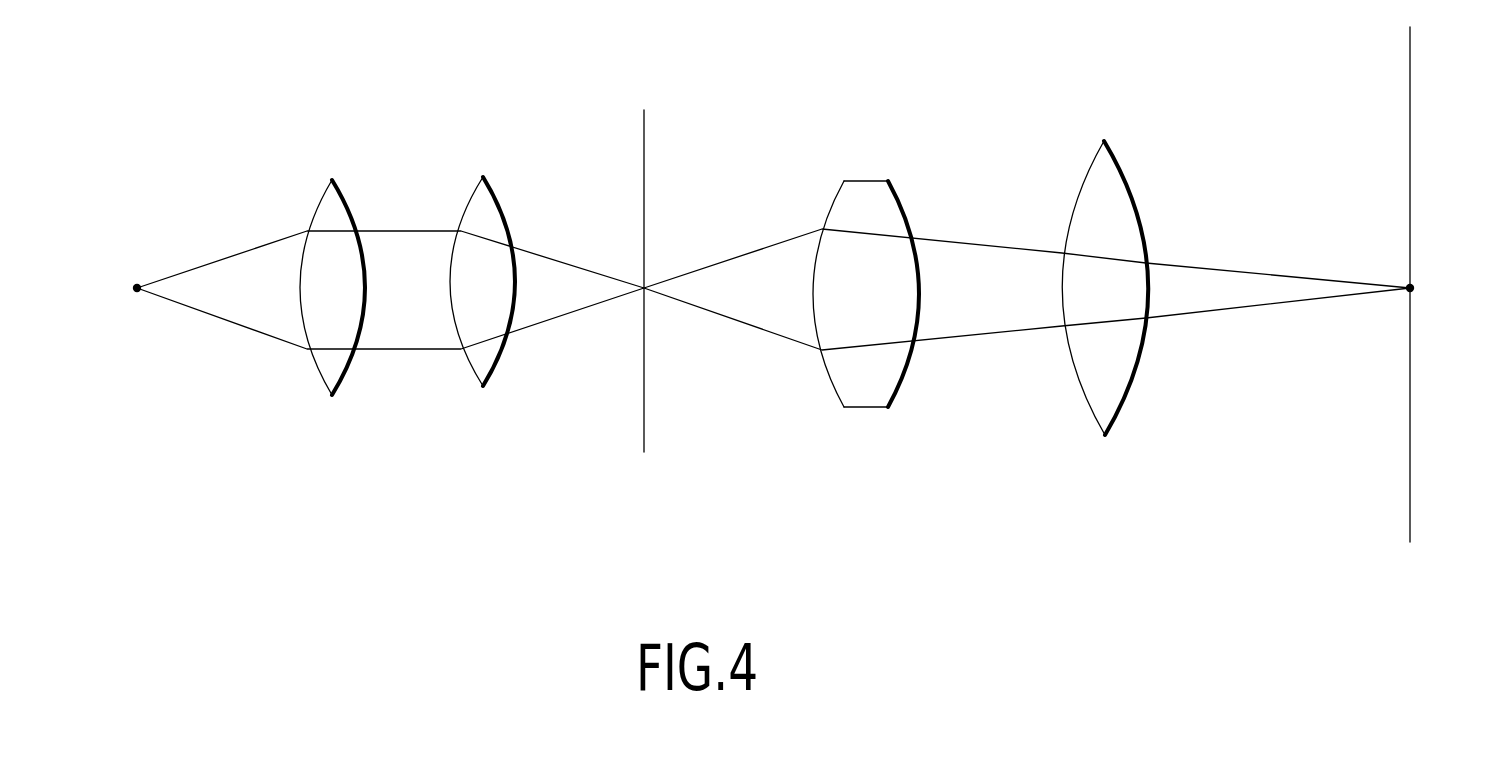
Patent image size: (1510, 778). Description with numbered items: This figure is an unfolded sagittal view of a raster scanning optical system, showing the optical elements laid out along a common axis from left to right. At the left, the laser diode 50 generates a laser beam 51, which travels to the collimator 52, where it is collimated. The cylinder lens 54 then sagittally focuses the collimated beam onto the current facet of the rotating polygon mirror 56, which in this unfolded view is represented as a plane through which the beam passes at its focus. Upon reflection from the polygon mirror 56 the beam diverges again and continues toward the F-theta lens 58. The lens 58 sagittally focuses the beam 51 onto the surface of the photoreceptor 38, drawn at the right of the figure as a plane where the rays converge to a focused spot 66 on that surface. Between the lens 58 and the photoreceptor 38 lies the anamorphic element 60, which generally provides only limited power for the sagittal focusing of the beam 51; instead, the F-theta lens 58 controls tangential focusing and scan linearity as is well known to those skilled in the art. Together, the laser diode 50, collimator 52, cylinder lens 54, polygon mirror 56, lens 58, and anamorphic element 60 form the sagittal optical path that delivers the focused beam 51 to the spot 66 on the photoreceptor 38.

The photoreceptor 38 is at (1410, 543).
The laser diode 50 is at (137, 293).
The laser beam 51 is at (214, 261).
The collimator 52 is at (347, 377).
The cylinder lens 54 is at (492, 373).
The rotating polygon mirror 56 is at (644, 453).
The F-theta lens 58 is at (868, 409).
The anamorphic element 60 is at (1112, 437).
The focal point / image spot 66 is at (1415, 289).